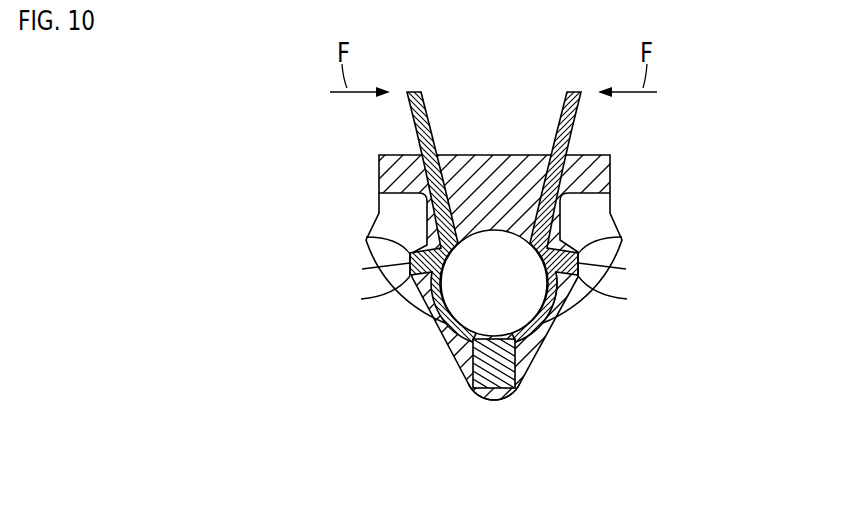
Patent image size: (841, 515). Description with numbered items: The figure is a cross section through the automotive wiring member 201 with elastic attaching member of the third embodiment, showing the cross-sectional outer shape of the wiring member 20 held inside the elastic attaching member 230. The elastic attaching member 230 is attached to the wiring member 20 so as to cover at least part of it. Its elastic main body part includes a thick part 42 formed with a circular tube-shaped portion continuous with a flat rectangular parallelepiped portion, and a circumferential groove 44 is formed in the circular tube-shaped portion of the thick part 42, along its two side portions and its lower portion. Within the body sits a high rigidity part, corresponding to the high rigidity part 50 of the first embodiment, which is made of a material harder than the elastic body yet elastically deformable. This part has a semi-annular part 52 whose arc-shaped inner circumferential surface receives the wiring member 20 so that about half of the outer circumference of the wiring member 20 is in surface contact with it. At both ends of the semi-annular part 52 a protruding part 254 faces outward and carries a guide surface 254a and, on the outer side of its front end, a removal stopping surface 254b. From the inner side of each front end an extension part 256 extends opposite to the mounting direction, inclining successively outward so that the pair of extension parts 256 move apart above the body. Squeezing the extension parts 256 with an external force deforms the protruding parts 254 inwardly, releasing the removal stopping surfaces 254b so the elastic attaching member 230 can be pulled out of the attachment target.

The automotive wiring member with elastic attaching member 201 is at (325, 155).
The elastic attaching member 230 is at (611, 154).
The extension part 256 is at (411, 90).
The protruding part 254 is at (362, 270).
The guide surface 254a is at (362, 299).
The removal stopping surface 254b is at (366, 237).
The wiring member 20 is at (489, 228).
The thick part 42 is at (625, 320).
The circumferential groove 44 is at (494, 412).
The high rigidity part 50 is at (557, 316).
The semi-annular part 52 is at (547, 335).